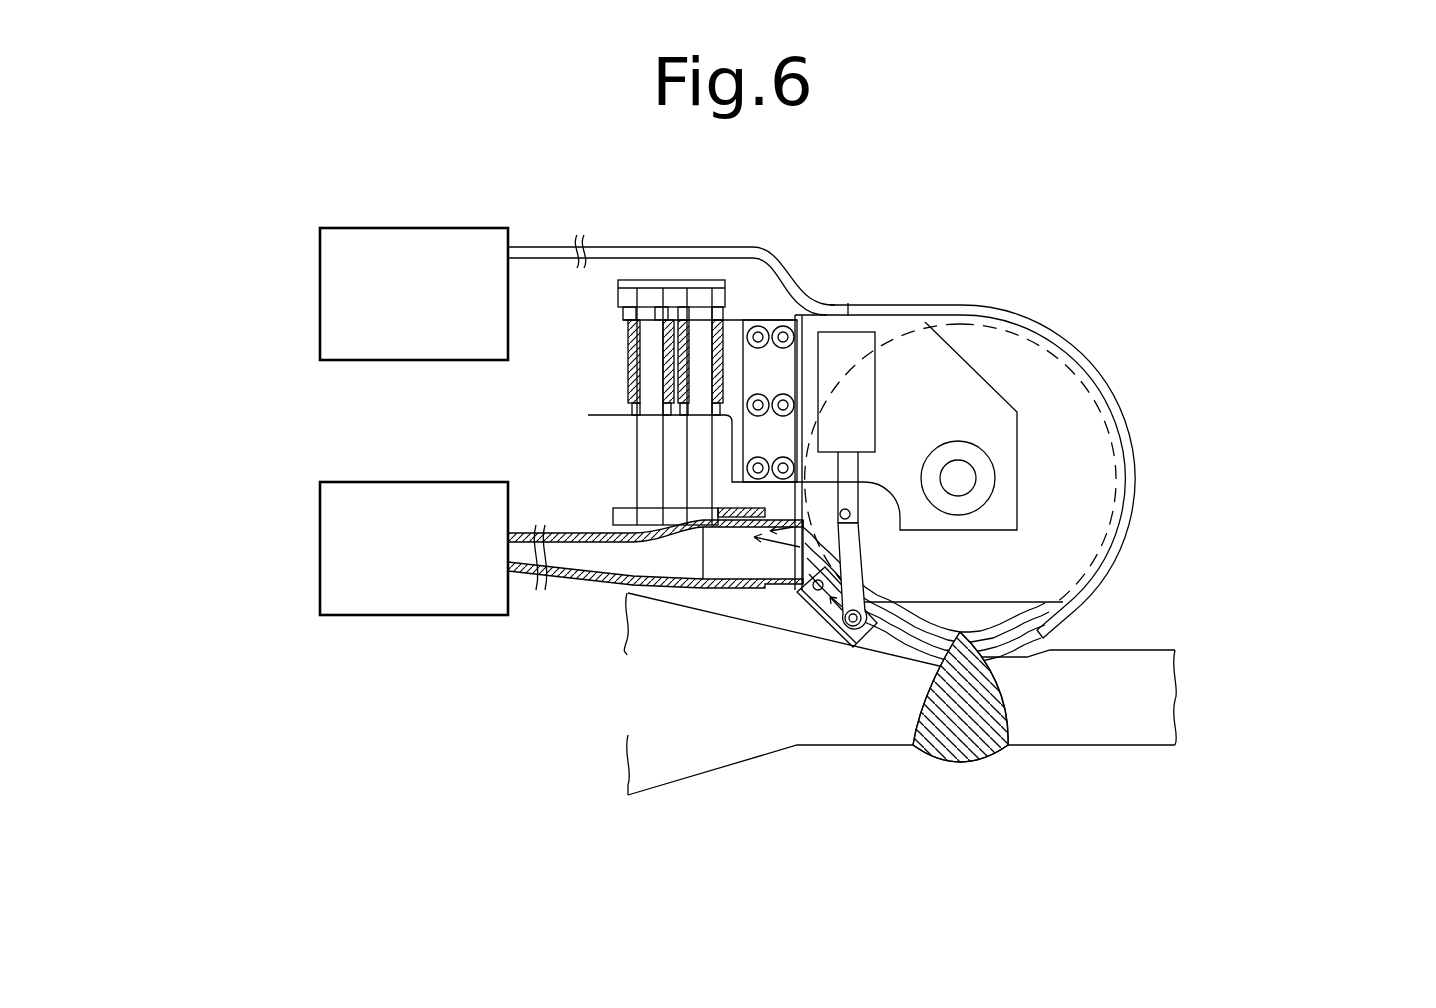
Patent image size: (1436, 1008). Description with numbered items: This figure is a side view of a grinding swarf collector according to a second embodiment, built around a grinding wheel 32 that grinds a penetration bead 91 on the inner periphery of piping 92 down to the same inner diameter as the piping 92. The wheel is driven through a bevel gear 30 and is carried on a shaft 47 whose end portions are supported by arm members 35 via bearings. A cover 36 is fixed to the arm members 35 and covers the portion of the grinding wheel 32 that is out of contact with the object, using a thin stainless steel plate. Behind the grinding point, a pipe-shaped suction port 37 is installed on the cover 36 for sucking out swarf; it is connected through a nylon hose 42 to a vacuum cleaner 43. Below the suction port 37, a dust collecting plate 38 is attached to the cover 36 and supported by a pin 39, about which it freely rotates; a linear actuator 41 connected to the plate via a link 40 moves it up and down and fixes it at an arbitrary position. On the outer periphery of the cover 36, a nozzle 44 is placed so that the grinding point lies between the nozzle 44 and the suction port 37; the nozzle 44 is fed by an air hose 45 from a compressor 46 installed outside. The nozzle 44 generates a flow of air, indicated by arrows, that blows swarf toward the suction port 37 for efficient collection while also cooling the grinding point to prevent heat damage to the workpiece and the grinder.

The bevel gear 30 is at (990, 453).
The grinding wheel 32 is at (1063, 602).
The arm member 35 is at (937, 387).
The cover 36 is at (1083, 368).
The suction port 37 is at (777, 557).
The dust collecting plate 38 is at (857, 637).
The pin 39 is at (815, 608).
The link 40 is at (847, 548).
The linear actuator 41 is at (850, 345).
The hose 42 is at (568, 575).
The vacuum cleaner 43 is at (320, 538).
The nozzle 44 is at (1135, 510).
The air hose 45 is at (737, 245).
The compressor 46 is at (320, 289).
The shaft 47 is at (975, 485).
The penetration bead 91 is at (983, 723).
The piping 92 is at (675, 747).